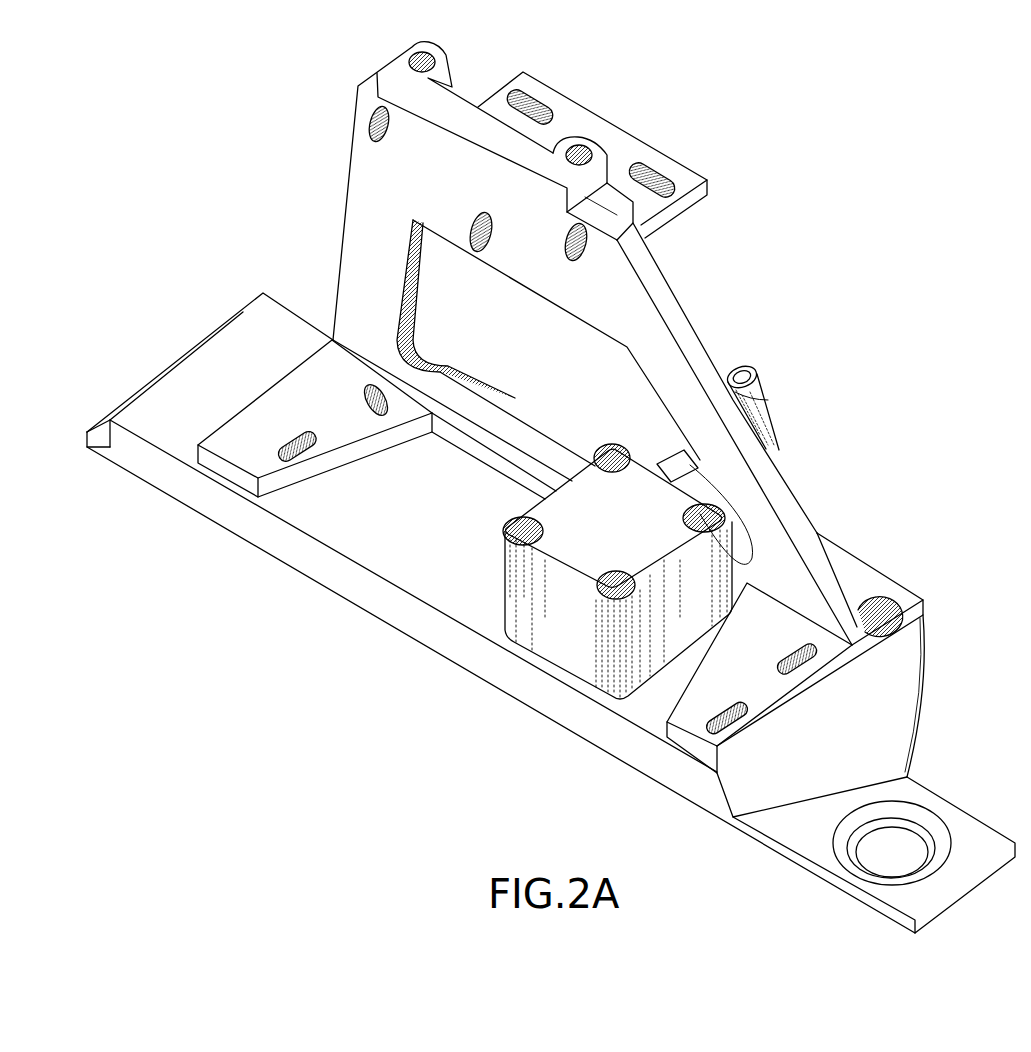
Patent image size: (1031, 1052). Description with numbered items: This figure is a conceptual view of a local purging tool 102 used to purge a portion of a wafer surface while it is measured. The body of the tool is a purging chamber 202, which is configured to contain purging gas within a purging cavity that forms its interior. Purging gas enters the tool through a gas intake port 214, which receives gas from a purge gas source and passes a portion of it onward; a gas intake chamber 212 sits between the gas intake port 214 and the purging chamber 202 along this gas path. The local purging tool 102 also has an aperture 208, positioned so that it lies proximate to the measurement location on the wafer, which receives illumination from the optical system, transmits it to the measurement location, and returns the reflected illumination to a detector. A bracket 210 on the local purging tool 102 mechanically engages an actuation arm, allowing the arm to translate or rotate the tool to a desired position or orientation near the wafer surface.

The local purging tool 102 is at (166, 533).
The purging chamber 202 is at (292, 318).
The aperture 208 is at (893, 851).
The bracket 210 is at (358, 170).
The gas intake chamber 212 is at (650, 482).
The gas intake port 214 is at (770, 400).